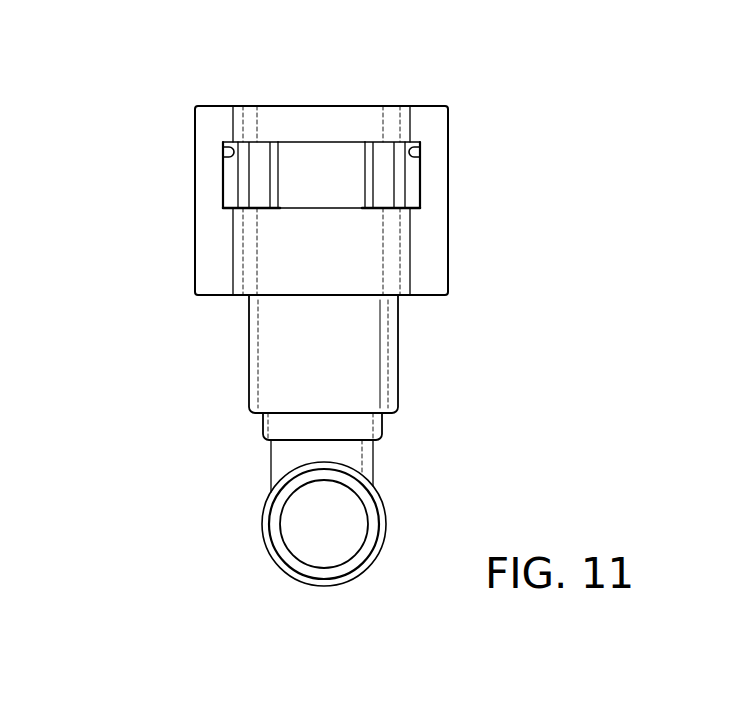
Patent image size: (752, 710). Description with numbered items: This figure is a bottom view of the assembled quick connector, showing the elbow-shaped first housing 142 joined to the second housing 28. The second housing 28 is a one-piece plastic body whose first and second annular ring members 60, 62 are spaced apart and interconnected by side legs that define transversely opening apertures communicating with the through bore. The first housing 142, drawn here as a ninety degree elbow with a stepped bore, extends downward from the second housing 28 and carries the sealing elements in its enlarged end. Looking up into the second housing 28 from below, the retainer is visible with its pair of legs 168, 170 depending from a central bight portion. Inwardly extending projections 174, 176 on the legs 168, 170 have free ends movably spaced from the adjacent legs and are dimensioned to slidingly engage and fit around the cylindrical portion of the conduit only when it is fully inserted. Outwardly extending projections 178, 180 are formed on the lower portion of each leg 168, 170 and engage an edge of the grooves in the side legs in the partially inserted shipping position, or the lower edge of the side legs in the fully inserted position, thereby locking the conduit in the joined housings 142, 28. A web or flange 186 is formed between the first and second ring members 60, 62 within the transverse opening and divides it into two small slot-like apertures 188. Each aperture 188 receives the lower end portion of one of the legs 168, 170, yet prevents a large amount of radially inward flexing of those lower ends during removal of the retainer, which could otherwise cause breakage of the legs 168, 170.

The second housing 28 is at (152, 203).
The first annular ring member 60 is at (393, 257).
The second annular ring member 62 is at (257, 117).
The first housing 142 is at (376, 352).
The retainer leg 168 is at (247, 173).
The retainer leg 170 is at (398, 198).
The inwardly extending projection 174 is at (363, 158).
The inwardly extending projection 176 is at (275, 163).
The outwardly extending projection 178 is at (413, 175).
The outwardly extending projection 180 is at (233, 197).
The web or flange 186 is at (326, 155).
The slot-like aperture 188 is at (223, 141).